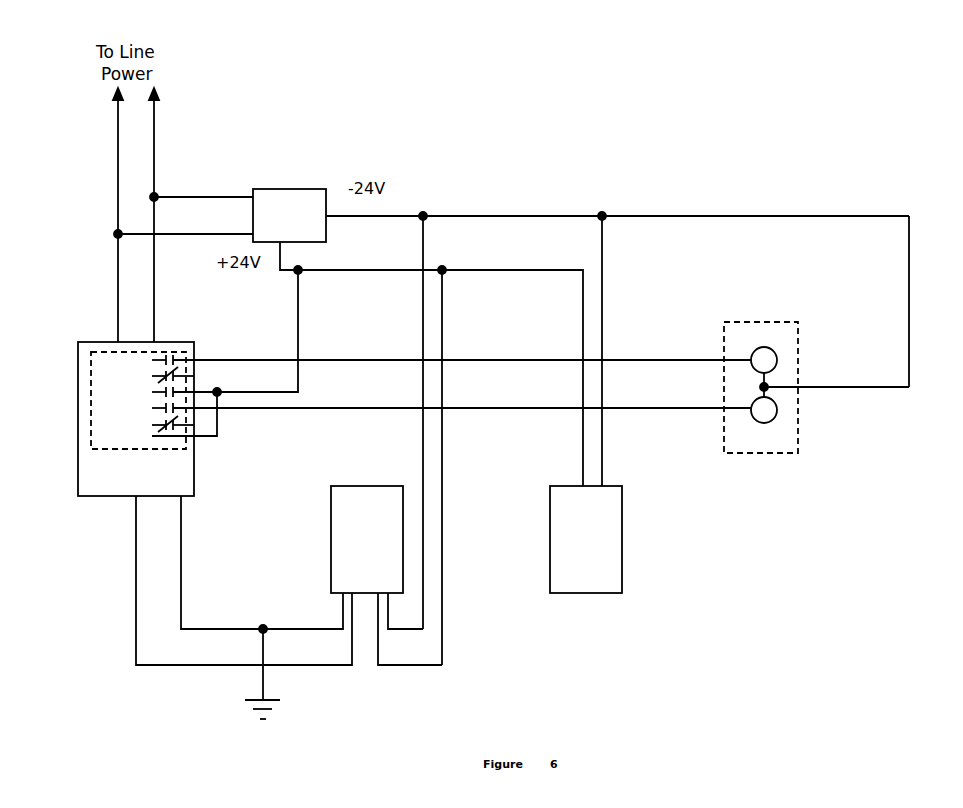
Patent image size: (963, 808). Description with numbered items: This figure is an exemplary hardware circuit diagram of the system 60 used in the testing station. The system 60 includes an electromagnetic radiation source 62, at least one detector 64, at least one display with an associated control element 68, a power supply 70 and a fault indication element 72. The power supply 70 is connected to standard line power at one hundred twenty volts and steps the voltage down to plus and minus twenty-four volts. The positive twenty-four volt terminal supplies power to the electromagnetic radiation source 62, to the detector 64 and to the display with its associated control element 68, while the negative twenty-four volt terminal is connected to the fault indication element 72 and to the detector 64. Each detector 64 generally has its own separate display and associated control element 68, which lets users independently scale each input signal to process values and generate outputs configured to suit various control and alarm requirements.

The system 60 is at (531, 157).
The electromagnetic radiation source 62 is at (586, 539).
The detector 64 is at (367, 539).
The control element 68 is at (109, 398).
The power supply 70 is at (289, 215).
The fault indication element 72 is at (799, 357).